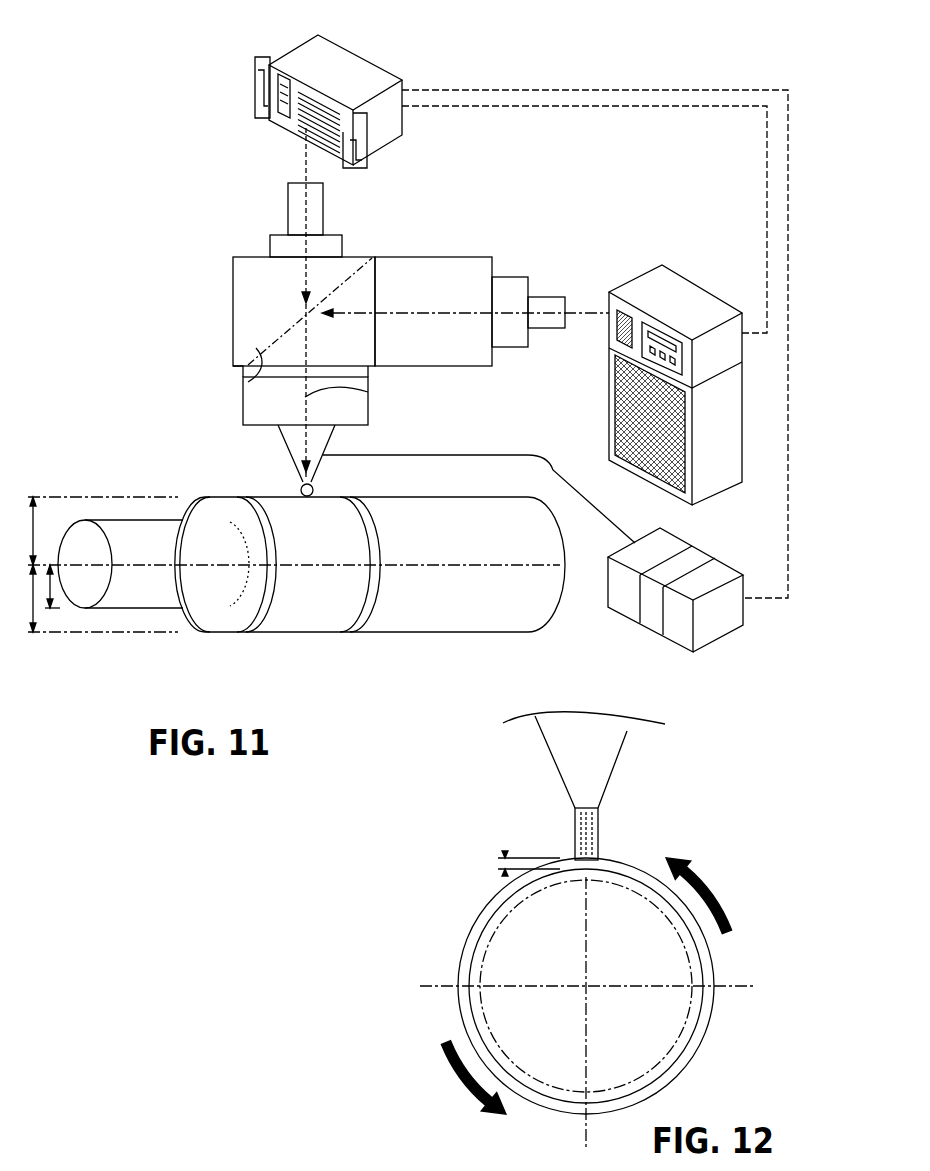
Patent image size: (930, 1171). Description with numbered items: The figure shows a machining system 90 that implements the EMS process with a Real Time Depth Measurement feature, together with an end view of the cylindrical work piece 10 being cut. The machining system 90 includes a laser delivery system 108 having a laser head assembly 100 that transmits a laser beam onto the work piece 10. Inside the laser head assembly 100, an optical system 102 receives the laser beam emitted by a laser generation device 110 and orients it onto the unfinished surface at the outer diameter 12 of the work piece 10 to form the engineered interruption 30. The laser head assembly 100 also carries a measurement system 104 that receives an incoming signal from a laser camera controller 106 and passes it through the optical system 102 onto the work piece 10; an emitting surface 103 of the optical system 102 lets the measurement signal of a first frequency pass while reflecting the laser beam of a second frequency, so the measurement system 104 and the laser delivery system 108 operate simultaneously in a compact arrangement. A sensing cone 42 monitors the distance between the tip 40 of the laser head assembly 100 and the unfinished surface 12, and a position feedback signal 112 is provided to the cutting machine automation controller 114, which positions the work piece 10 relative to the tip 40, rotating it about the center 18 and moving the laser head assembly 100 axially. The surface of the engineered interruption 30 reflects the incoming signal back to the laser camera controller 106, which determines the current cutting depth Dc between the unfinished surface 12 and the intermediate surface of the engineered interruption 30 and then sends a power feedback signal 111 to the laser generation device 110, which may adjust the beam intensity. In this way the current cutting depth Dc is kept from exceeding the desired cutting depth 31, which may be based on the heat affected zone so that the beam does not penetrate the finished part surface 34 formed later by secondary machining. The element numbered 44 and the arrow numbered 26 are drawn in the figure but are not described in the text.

In FIG. 11, the machining system 90 is at (120, 72).
In FIG. 11, the laser camera controller 106 is at (255, 92).
In FIG. 11, the measurement system 104 is at (302, 206).
In FIG. 11, the laser head assembly 100 is at (233, 311).
In FIG. 11, the optical system 102 is at (265, 340).
In FIG. 11, the emitting surface 103 is at (256, 378).
In FIG. 11, the laser delivery system 108 is at (549, 300).
In FIG. 11, the laser generation device 110 is at (636, 282).
In FIG. 11, the power feedback signal 111 is at (767, 164).
In FIG. 11, the position feedback signal 112 is at (788, 136).
In FIG. 11, the cutting machine automation controller 114 is at (735, 565).
In FIG. 11, the engineered interruption 30 is at (205, 497).
In FIG. 12, the engineered interruption 30 is at (560, 862).
In FIG. 11, the tip 40 is at (300, 477).
In FIG. 12, the tip 40 is at (586, 806).
In FIG. 11, the sensing cone 42 is at (286, 444).
In FIG. 12, the sensing cone 42 is at (548, 760).
In FIG. 11, the beam spot / nozzle 44 is at (313, 488).
In FIG. 12, the beam spot / nozzle 44 is at (598, 830).
In FIG. 12, the work piece 10 is at (615, 898).
In FIG. 12, the outer diameter 12 is at (498, 892).
In FIG. 12, the desired cutting depth 31 is at (483, 922).
In FIG. 12, the center 18 is at (586, 986).
In FIG. 12, the finished part surface 34 is at (652, 900).
In FIG. 12, the rotation direction arrow 26 is at (460, 1080).
In FIG. 12, the current cutting depth Dc is at (505, 852).